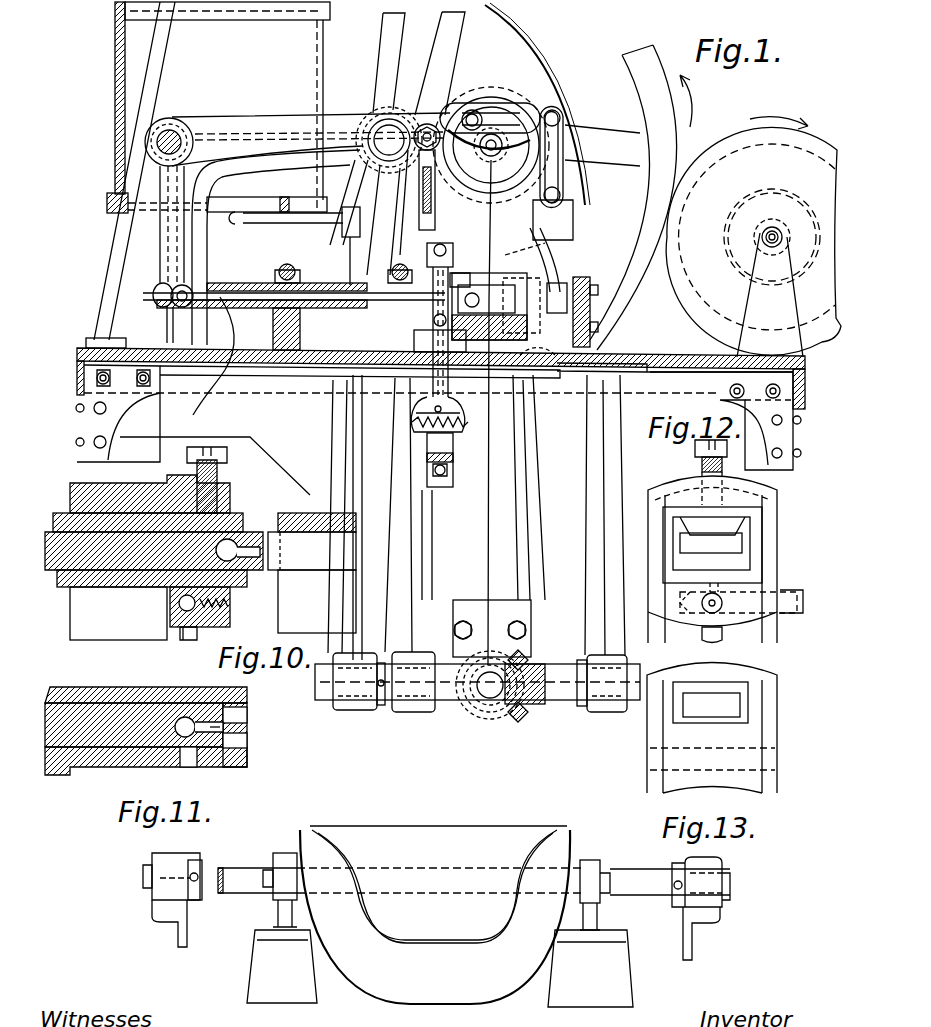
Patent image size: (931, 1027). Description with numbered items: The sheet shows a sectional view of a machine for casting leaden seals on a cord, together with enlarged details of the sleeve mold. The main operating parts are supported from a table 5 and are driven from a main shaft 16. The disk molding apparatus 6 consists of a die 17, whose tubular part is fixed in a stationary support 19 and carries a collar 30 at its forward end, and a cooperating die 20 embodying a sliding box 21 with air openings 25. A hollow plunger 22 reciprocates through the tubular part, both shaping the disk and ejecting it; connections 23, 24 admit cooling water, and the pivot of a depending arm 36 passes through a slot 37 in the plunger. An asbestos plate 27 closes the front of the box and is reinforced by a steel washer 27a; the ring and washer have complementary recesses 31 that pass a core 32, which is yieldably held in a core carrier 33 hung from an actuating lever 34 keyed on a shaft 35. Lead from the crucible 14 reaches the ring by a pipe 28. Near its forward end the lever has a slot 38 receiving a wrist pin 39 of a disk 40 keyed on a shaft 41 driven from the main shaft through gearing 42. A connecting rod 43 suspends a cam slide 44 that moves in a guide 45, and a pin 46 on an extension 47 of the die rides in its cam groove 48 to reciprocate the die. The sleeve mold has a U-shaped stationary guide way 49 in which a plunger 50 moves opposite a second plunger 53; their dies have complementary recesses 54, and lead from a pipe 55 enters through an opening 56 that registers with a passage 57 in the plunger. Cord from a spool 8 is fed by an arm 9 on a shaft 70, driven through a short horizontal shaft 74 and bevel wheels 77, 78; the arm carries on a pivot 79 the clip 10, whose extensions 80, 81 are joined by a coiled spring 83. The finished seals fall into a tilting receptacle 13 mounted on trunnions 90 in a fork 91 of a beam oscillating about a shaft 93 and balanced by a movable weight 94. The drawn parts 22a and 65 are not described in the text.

In FIG. 1, the table 5 is at (682, 360).
In FIG. 1, the molding apparatus 6 is at (355, 268).
In FIG. 1, the spool 8 is at (812, 320).
In FIG. 1, the feeding arm 9 is at (452, 480).
In FIG. 1, the clip 10 is at (460, 275).
In FIG. 13, the receptacle 13 is at (435, 915).
In FIG. 1, the crucible 14 is at (218, 107).
In FIG. 1, the main shaft 16 is at (385, 128).
In FIG. 1, the die 17 is at (386, 265).
In FIG. 1, the stationary support 19 is at (272, 329).
In FIG. 1, the die 20 is at (486, 299).
In FIG. 1, the box 21 is at (480, 298).
In FIG. 1, the plunger 22 is at (300, 300).
In FIG. 1, the shaft extension 22a is at (360, 385).
In FIG. 1, the connection 23 is at (350, 360).
In FIG. 1, the connection 24 is at (211, 359).
In FIG. 1, the openings 25 is at (525, 245).
In FIG. 1, the asbestos plate 27 is at (535, 247).
In FIG. 1, the steel washer 27a is at (515, 380).
In FIG. 1, the pipe 28 is at (325, 235).
In FIG. 1, the collar 30 is at (431, 288).
In FIG. 1, the complementary recesses 31 is at (361, 202).
In FIG. 1, the core 32 is at (435, 228).
In FIG. 1, the core carrier 33 is at (432, 170).
In FIG. 1, the actuating lever 34 is at (248, 124).
In FIG. 1, the shaft 35 is at (174, 129).
In FIG. 1, the depending arm 36 is at (168, 245).
In FIG. 1, the slot 37 is at (168, 305).
In FIG. 1, the slot 38 is at (492, 140).
In FIG. 1, the wrist pin 39 is at (474, 108).
In FIG. 1, the disk 40 is at (545, 150).
In FIG. 1, the shaft 41 is at (435, 190).
In FIG. 1, the gearing 42 is at (490, 200).
In FIG. 1, the connecting rod 43 is at (566, 178).
In FIG. 1, the cam slide 44 is at (570, 207).
In FIG. 1, the guide 45 is at (598, 327).
In FIG. 1, the pin 46 is at (598, 292).
In FIG. 1, the extension 47 is at (546, 298).
In FIG. 1, the cam groove 48 is at (563, 245).
In FIG. 11, the stationary guide way 49 is at (215, 755).
In FIG. 10, the plunger 50 is at (250, 530).
In FIG. 11, the plunger 50 is at (150, 740).
In FIG. 12, the plunger 50 is at (740, 560).
In FIG. 10, the plunger 53 is at (312, 573).
In FIG. 12, the plunger 53 is at (706, 720).
In FIG. 10, the complementary recesses 54 is at (258, 557).
In FIG. 11, the complementary recesses 54 is at (225, 722).
In FIG. 12, the complementary recesses 54 is at (711, 562).
In FIG. 12, the pipe 55 is at (792, 603).
In FIG. 11, the opening 56 is at (190, 740).
In FIG. 11, the passage 57 is at (183, 748).
In FIG. 1, the axle 65 is at (778, 236).
In FIG. 1, the shaft 70 is at (570, 700).
In FIG. 1, the short horizontal shaft 74 is at (475, 695).
In FIG. 1, the bevel wheel 77 is at (478, 712).
In FIG. 1, the bevel wheel 78 is at (520, 712).
In FIG. 1, the pivot 79 is at (438, 341).
In FIG. 1, the extension 80 is at (430, 385).
In FIG. 1, the extension 81 is at (448, 388).
In FIG. 1, the coiled spring 83 is at (452, 440).
In FIG. 13, the trunnions 90 is at (267, 887).
In FIG. 13, the fork 91 is at (288, 860).
In FIG. 13, the shaft 93 is at (245, 870).
In FIG. 13, the movable weight 94 is at (262, 970).